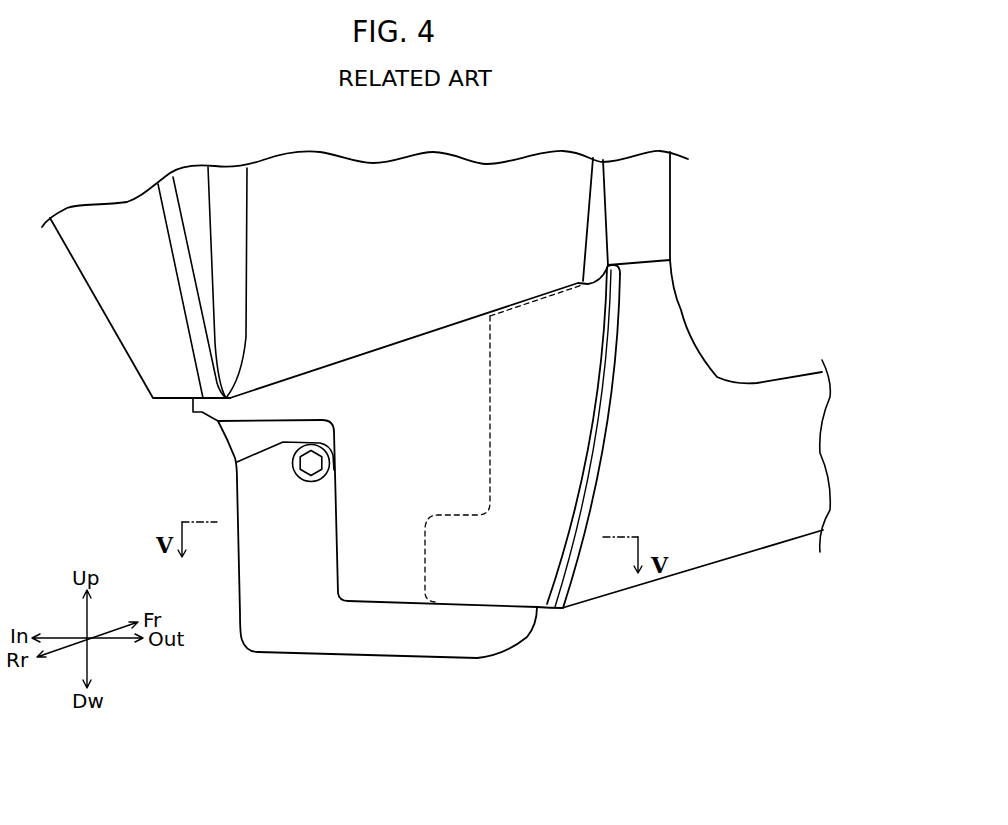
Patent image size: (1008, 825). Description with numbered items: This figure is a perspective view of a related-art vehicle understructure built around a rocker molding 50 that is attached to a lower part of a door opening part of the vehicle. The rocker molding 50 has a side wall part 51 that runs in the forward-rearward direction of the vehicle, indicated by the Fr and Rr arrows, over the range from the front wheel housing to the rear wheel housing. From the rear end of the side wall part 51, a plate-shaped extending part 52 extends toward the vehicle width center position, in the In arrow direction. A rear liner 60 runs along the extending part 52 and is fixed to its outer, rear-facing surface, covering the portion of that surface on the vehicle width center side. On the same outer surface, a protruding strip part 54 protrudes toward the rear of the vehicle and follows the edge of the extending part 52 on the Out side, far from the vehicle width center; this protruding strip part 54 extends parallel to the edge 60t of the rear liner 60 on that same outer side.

The rocker molding 50 is at (740, 540).
The side wall part 51 is at (688, 567).
The extending part 52 is at (533, 293).
The protruding strip part 54 is at (617, 323).
The rear liner 60 is at (598, 298).
The edge of rear liner 60t is at (593, 425).